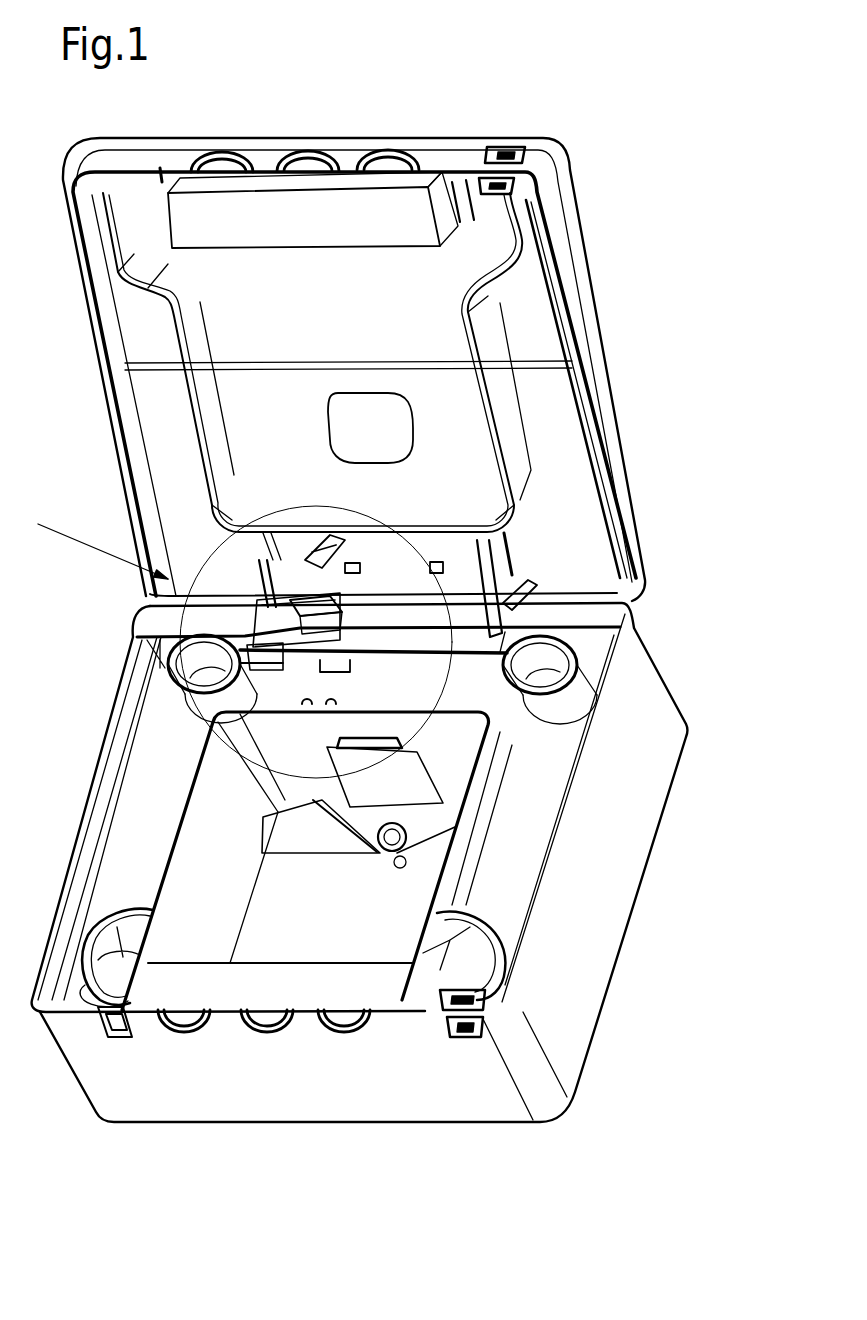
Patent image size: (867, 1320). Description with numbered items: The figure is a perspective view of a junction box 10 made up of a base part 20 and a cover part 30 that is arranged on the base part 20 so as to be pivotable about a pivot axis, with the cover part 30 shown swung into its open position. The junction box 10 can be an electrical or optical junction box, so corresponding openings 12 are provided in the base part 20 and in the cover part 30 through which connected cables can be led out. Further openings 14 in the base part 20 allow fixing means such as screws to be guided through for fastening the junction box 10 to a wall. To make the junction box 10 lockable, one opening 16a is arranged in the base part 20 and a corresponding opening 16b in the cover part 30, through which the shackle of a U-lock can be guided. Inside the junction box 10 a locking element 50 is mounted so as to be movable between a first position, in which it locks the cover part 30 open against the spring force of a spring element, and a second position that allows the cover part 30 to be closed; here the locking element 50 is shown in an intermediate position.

The junction box 10 is at (619, 118).
The openings 12 is at (307, 153).
The openings 14 is at (184, 670).
The opening 16a is at (467, 1040).
The opening 16b is at (510, 150).
The base part 20 is at (643, 740).
The cover part 30 is at (580, 383).
The locking element 50 is at (305, 604).